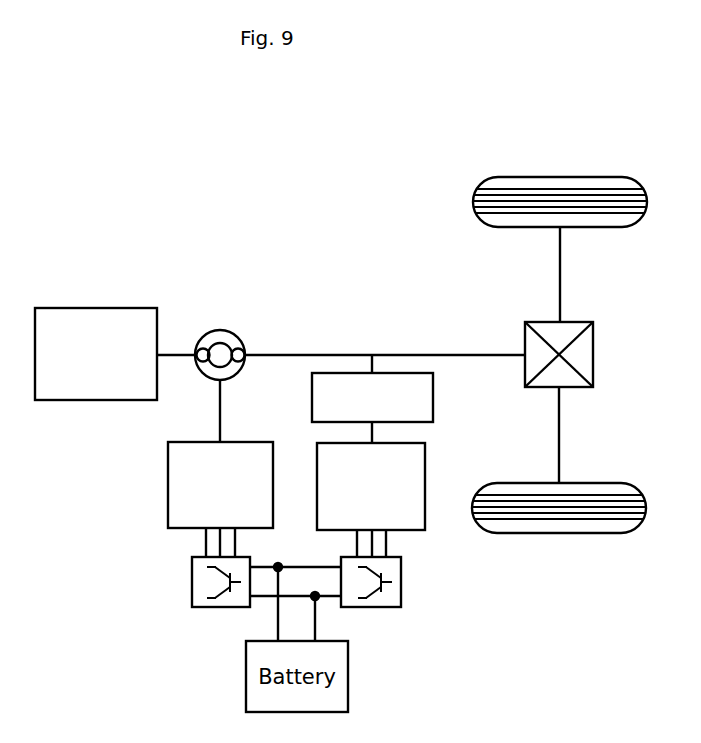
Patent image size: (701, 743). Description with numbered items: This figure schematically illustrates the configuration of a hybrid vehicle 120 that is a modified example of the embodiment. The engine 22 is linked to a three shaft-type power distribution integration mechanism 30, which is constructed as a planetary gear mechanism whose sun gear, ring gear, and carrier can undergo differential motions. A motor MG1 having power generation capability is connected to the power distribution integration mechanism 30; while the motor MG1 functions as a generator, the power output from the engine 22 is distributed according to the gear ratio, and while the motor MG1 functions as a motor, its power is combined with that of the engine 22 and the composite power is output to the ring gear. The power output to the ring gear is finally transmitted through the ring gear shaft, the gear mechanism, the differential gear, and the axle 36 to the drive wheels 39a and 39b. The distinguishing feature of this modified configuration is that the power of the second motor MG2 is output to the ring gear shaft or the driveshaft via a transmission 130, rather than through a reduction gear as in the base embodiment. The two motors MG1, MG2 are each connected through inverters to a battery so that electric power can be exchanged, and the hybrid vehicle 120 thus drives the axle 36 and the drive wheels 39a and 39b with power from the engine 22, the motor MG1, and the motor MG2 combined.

The hybrid vehicle 120 is at (294, 166).
The engine 22 is at (97, 308).
The power distribution integration mechanism 30 is at (220, 330).
The axle 36 is at (560, 271).
The drive wheel 39a is at (558, 177).
The drive wheel 39b is at (558, 533).
The transmission 130 is at (433, 397).
The motor MG1 is at (168, 485).
The motor MG2 is at (425, 485).